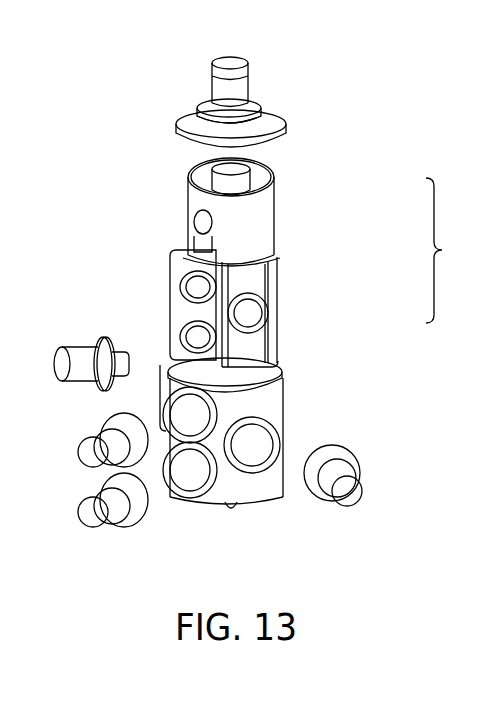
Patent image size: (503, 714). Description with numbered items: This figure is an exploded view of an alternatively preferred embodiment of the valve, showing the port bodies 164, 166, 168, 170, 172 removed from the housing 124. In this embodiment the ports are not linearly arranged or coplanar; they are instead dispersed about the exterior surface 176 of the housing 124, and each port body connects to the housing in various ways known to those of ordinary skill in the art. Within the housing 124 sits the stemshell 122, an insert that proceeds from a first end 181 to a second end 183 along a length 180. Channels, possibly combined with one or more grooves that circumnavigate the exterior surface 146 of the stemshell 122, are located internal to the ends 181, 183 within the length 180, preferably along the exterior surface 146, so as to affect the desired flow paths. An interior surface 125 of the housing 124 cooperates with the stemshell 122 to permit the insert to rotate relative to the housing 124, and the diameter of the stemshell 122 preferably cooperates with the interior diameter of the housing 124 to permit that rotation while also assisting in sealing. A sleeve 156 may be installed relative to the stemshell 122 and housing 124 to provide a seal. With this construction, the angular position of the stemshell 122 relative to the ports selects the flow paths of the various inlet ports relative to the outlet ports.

The stemshell 122 is at (277, 221).
The housing 124 is at (290, 426).
The interior surface 125 is at (282, 368).
The exterior surface 146 is at (190, 210).
The sleeve 156 is at (175, 247).
The port body 164 is at (82, 452).
The port body 166 is at (76, 352).
The port body 168 is at (130, 524).
The port body 170 is at (353, 463).
The port body 172 is at (274, 108).
The exterior surface 176 is at (283, 393).
The length 180 is at (277, 282).
The first end 181 is at (274, 172).
The second end 183 is at (270, 307).